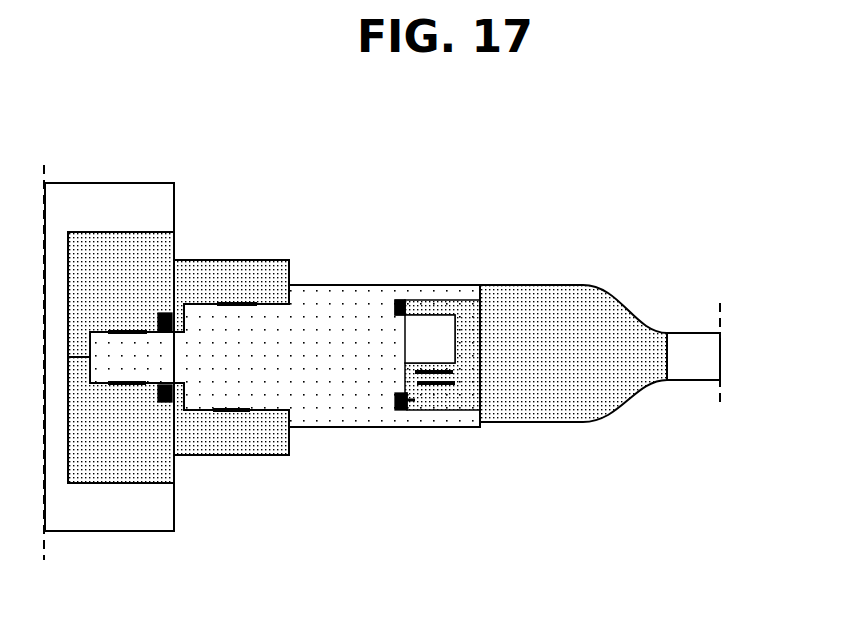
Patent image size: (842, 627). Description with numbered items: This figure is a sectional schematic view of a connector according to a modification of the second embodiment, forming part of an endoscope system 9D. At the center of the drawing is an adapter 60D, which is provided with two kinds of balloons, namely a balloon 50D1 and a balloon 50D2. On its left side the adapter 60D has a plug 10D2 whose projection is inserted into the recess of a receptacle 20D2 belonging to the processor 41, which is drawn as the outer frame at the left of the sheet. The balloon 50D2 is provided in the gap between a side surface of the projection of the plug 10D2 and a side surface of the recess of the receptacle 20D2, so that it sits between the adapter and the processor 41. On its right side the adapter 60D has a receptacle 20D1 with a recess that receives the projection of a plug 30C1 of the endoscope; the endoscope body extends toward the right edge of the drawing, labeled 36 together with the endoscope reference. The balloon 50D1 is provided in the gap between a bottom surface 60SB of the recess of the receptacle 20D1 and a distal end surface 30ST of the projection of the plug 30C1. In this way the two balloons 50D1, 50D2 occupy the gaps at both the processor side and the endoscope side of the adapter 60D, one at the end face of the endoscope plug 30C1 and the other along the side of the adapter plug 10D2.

The endoscope system 9D is at (642, 180).
The processor 41 is at (120, 183).
The receptacle 20D2 is at (236, 260).
The receptacle 20D1 is at (443, 428).
The balloon 50D2 is at (165, 403).
The plug 10D2 is at (256, 412).
The plug 30C1 is at (535, 423).
The balloon 50D1 is at (398, 299).
The distal end surface 30ST is at (390, 306).
The bottom surface 60SB is at (408, 402).
The terminal (wiring 30D) 36 is at (700, 380).
The adapter 60D is at (445, 513).